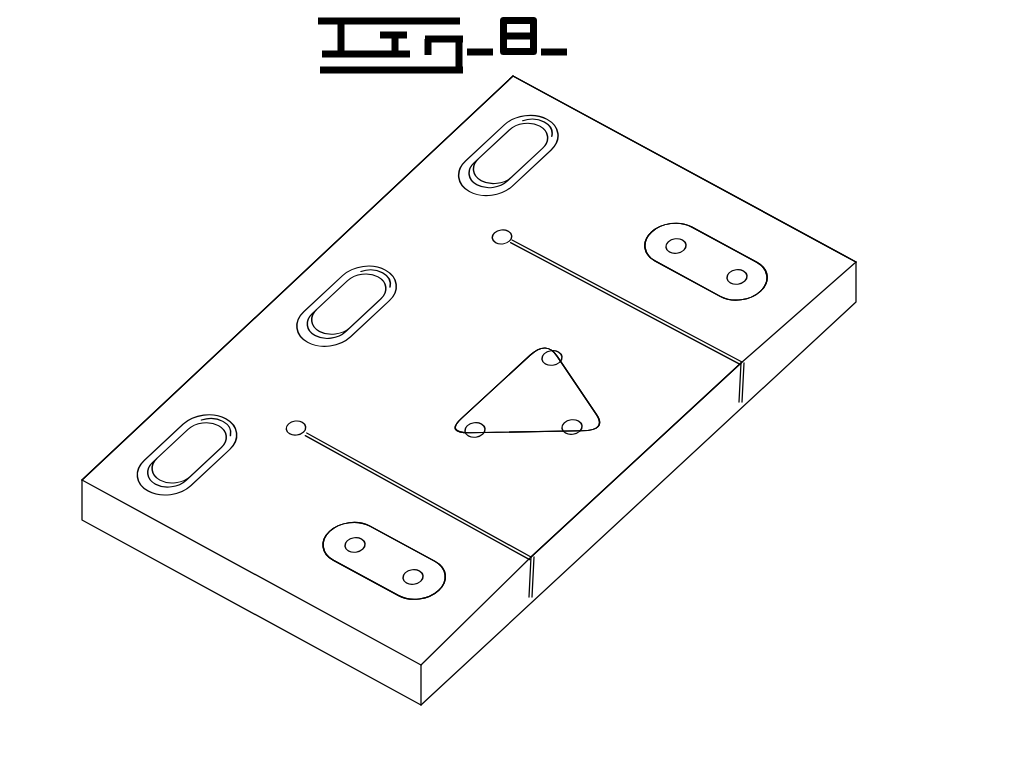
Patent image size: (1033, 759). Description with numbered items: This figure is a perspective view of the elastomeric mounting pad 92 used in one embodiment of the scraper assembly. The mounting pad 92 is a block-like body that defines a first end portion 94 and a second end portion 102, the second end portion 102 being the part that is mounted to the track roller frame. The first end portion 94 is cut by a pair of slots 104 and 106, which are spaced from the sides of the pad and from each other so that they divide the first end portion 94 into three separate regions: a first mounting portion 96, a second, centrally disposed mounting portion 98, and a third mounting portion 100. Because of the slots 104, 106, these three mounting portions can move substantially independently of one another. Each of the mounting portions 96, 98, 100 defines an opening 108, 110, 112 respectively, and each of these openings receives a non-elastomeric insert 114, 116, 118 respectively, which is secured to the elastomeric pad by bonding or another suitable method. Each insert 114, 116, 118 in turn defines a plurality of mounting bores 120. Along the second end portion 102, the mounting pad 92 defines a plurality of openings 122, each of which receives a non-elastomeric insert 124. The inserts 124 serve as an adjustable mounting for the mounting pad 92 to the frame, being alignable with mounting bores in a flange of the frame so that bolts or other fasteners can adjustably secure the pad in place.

The mounting pad 92 is at (418, 338).
The first end portion 94 is at (640, 140).
The first mounting portion 96 is at (448, 618).
The second mounting portion 98 is at (615, 472).
The third mounting portion 100 is at (774, 317).
The second end portion 102 is at (390, 191).
The slot 104 is at (320, 433).
The slot 106 is at (573, 273).
The opening 108 is at (337, 533).
The opening 110 is at (484, 403).
The opening 112 is at (660, 232).
The non-elastomeric insert 114 is at (390, 560).
The non-elastomeric insert 116 is at (550, 407).
The non-elastomeric insert 118 is at (717, 260).
The mounting bores 120 is at (684, 240).
The openings 122 is at (533, 120).
The non-elastomeric inserts 124 is at (487, 133).